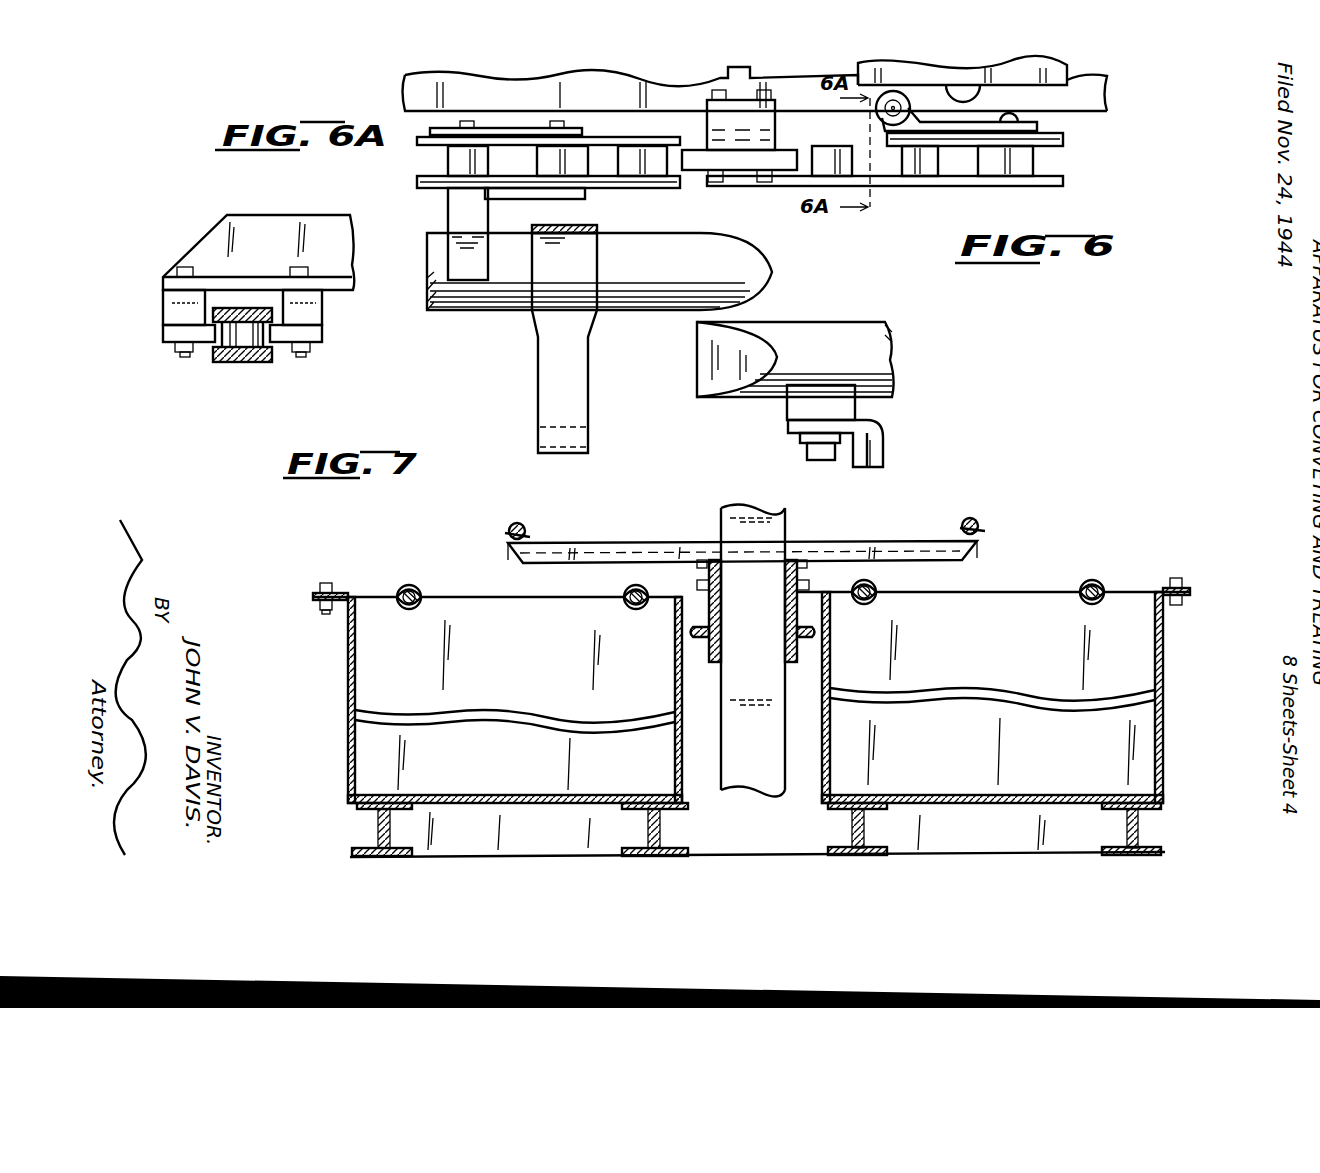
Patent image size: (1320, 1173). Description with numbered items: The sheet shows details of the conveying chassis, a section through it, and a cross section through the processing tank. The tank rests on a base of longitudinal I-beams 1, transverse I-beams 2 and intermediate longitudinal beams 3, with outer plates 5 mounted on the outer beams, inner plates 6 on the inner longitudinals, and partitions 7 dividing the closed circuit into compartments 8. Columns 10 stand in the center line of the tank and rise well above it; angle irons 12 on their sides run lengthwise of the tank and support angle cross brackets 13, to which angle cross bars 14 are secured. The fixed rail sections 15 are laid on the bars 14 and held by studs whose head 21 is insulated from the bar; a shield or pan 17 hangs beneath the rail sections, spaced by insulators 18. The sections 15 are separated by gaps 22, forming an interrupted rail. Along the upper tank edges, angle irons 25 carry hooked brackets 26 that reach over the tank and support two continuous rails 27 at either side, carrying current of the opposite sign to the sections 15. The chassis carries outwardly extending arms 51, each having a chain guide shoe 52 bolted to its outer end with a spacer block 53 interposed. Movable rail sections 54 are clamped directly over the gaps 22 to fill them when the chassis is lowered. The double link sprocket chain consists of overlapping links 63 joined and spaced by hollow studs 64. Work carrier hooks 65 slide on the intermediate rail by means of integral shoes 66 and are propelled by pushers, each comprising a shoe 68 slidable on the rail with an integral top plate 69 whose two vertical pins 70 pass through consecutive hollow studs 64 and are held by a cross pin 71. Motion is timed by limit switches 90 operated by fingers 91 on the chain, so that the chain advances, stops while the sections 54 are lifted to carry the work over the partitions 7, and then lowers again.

In FIG. 7, the longitudinal I-beams 1 is at (1142, 820).
In FIG. 7, the transverse I-beams 2 is at (736, 829).
In FIG. 7, the intermediate longitudinal beams 3 is at (858, 822).
In FIG. 7, the outer plates 5 is at (355, 752).
In FIG. 7, the inner plates 6 is at (832, 662).
In FIG. 7, the partitions 7 is at (370, 663).
In FIG. 7, the compartments 8 is at (1025, 602).
In FIG. 7, the columns 10 is at (738, 790).
In FIG. 7, the angle irons 12 is at (721, 632).
In FIG. 6, the angle cross brackets 13 is at (885, 462).
In FIG. 7, the angle cross brackets 13 is at (705, 540).
In FIG. 6, the angle cross bars 14 is at (875, 430).
In FIG. 7, the angle cross bars 14 is at (635, 540).
In FIG. 6, the rail sections 15 is at (815, 328).
In FIG. 7, the rail sections 15 is at (975, 518).
In FIG. 6, the shield or pan 17 is at (850, 410).
In FIG. 7, the shield or pan 17 is at (965, 528).
In FIG. 7, the insulators 18 is at (985, 543).
In FIG. 6, the head 21 is at (805, 452).
In FIG. 6, the gaps 22 is at (695, 360).
In FIG. 7, the angle irons 25 is at (1185, 600).
In FIG. 7, the hooked brackets 26 is at (1118, 592).
In FIG. 7, the continuous rails 27 is at (1098, 582).
In FIG. 6, the arms 51 is at (735, 86).
In FIG. 6A, the arms 51 is at (225, 222).
In FIG. 6, the chain guide shoe 52 is at (715, 172).
In FIG. 6A, the chain guide shoe 52 is at (170, 340).
In FIG. 6, the spacer block 53 is at (707, 120).
In FIG. 6A, the spacer block 53 is at (318, 318).
In FIG. 6, the rail sections 54 is at (648, 312).
In FIG. 6, the links 63 is at (420, 142).
In FIG. 6A, the links 63 is at (262, 362).
In FIG. 6, the hollow studs 64 is at (420, 184).
In FIG. 6A, the hollow studs 64 is at (225, 340).
In FIG. 6, the work carrier hooks 65 is at (555, 373).
In FIG. 6, the shoes 66 is at (583, 226).
In FIG. 6, the shoe 68 is at (448, 240).
In FIG. 6, the top plate 69 is at (495, 195).
In FIG. 6, the vertical pins 70 is at (557, 121).
In FIG. 6, the cross pin 71 is at (515, 130).
In FIG. 6, the limit switches 90 is at (1070, 74).
In FIG. 6, the fingers 91 is at (885, 134).